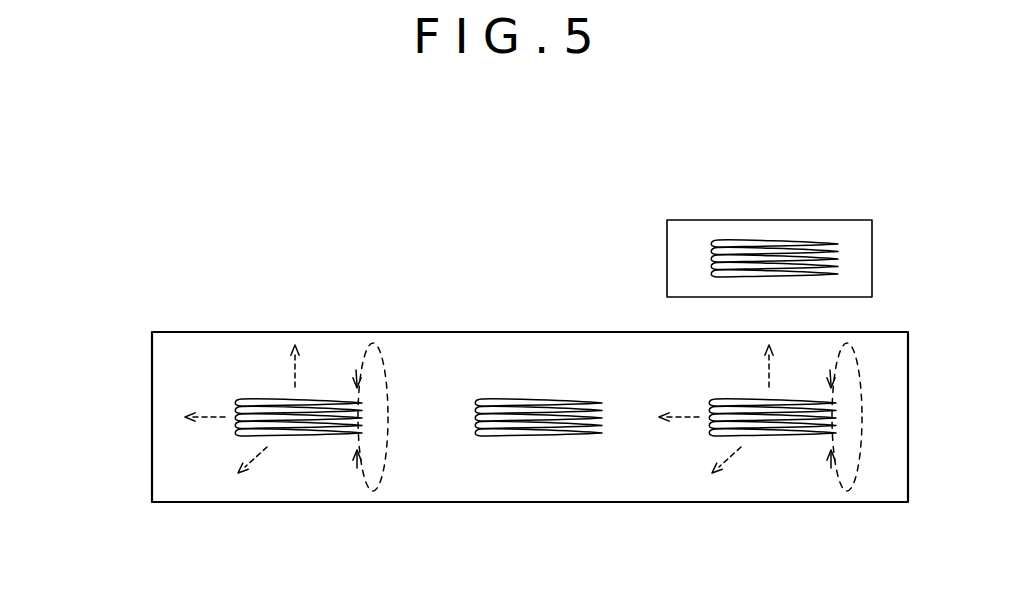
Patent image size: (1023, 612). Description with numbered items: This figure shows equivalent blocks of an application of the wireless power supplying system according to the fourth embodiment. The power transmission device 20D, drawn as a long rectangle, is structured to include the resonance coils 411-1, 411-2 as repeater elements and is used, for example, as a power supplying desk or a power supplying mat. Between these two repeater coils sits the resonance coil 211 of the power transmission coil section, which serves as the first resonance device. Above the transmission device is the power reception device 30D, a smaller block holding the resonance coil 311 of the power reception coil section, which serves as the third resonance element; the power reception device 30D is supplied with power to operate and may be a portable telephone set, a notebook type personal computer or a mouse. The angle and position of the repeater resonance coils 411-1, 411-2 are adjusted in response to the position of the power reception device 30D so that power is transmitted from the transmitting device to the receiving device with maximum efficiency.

The power transmission device 20D is at (142, 513).
The power reception device 30D is at (872, 258).
The resonance coil 211 is at (538, 397).
The resonance coil 311 is at (768, 240).
The resonance coil 411-1 is at (872, 473).
The resonance coil 411-2 is at (250, 387).